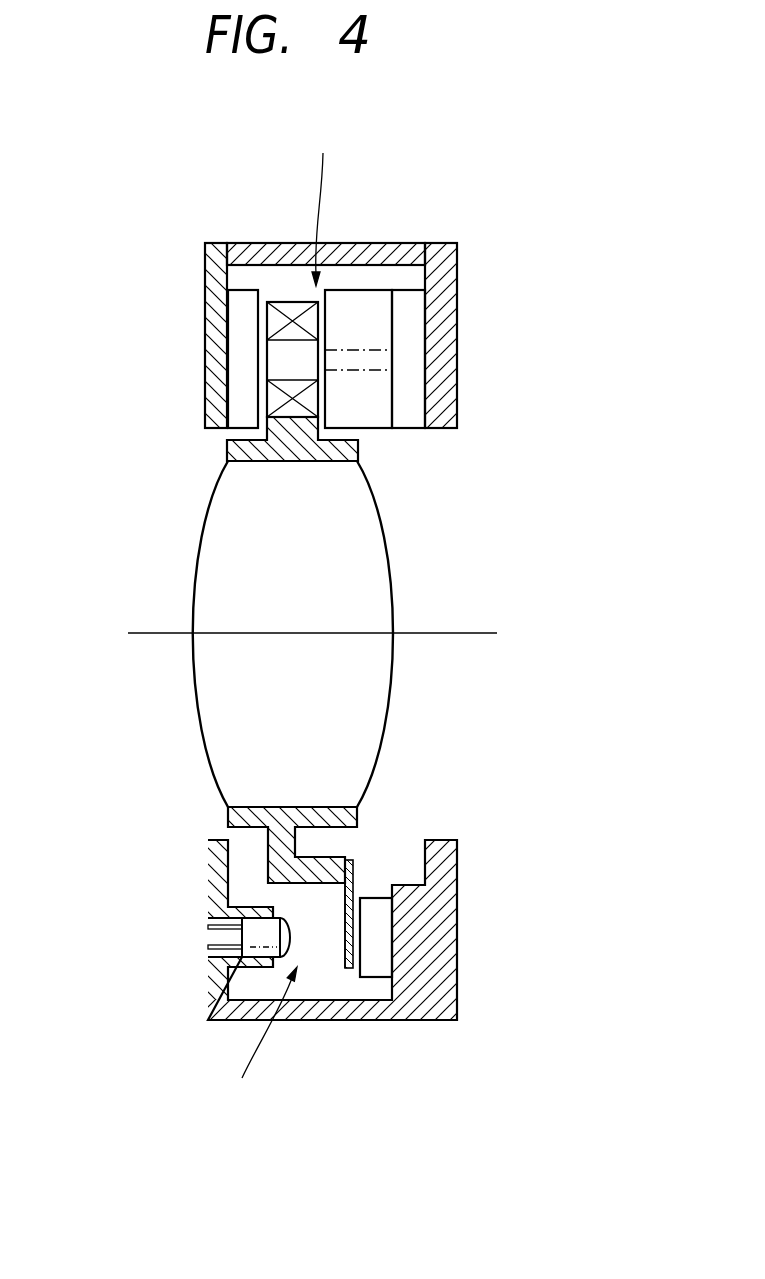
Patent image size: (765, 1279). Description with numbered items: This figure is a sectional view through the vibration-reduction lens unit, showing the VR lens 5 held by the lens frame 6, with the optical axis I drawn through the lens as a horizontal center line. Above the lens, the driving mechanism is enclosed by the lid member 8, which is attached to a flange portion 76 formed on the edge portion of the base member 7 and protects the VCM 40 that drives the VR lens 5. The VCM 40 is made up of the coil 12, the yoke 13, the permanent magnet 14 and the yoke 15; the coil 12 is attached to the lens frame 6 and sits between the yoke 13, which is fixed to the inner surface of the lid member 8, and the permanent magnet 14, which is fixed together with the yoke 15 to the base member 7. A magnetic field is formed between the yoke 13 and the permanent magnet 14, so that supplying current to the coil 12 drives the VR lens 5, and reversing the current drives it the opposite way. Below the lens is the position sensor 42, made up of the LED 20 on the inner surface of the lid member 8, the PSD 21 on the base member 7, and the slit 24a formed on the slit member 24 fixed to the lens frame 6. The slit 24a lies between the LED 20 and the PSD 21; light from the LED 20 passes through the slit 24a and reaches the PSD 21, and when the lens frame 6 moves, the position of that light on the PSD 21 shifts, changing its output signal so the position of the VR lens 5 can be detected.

The VR lens 5 is at (210, 735).
The lens frame 6 is at (233, 448).
The base member 7 is at (452, 368).
The lid member 8 is at (208, 373).
The flange portion 76 is at (437, 243).
The coil 12 is at (287, 307).
The yoke 13 is at (237, 312).
The permanent magnet 14 is at (372, 303).
The yoke 15 is at (412, 313).
The VCM 40 is at (314, 202).
The optical axis I is at (147, 633).
The LED 20 is at (263, 948).
The PSD 21 is at (380, 928).
The slit member 24 is at (352, 967).
The slit 24a is at (345, 932).
The position sensor 42 is at (222, 1034).